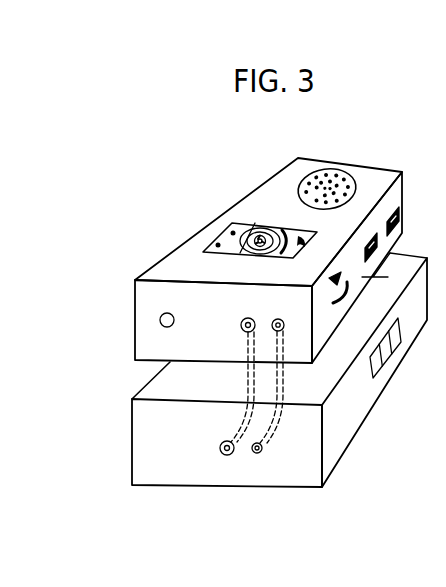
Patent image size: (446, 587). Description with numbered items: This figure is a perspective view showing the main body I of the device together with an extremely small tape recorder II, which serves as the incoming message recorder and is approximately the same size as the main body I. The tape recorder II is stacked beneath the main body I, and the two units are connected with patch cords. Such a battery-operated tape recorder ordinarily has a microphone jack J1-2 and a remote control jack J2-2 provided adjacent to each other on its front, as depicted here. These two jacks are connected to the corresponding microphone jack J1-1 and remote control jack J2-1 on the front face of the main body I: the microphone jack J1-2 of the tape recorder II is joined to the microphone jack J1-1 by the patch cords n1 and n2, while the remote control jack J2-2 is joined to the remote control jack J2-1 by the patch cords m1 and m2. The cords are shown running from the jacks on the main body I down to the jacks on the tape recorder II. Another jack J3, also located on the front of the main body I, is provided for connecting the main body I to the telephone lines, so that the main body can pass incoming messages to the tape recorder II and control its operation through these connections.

The main body I is at (142, 320).
The tape recorder II is at (137, 423).
The jack J3 is at (160, 333).
The microphone jack J1-1 is at (230, 337).
The remote control jack J2-1 is at (295, 337).
The microphone jack J1-2 is at (226, 455).
The remote control jack J2-2 is at (257, 454).
The patch cord n1 is at (247, 377).
The patch cord n2 is at (248, 390).
The patch cord m1 is at (280, 377).
The patch cord m2 is at (280, 392).